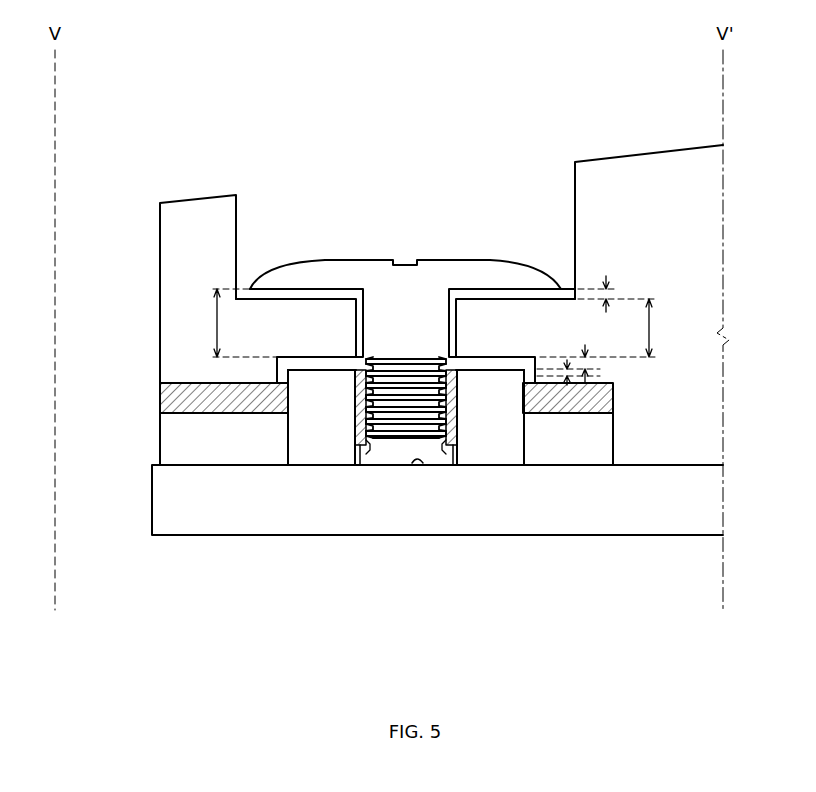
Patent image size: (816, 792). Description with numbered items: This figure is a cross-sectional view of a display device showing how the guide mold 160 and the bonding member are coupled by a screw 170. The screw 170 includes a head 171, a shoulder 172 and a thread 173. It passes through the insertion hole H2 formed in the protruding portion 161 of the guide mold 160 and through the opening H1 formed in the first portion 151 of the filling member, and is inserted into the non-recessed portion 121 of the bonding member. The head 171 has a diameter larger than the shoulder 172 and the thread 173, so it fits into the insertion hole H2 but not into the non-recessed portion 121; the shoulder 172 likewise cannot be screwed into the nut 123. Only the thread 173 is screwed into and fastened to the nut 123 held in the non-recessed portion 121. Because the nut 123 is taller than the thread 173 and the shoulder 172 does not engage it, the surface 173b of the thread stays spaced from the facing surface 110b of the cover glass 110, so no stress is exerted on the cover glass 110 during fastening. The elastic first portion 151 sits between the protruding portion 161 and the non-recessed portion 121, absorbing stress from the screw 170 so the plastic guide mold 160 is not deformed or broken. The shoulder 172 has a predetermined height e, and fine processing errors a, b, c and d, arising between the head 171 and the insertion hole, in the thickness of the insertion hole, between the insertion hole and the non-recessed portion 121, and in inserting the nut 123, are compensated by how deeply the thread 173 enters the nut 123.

The cover glass 110 is at (182, 500).
The surface of the cover glass 110b is at (417, 462).
The non-recessed portion 121 is at (265, 447).
The nut 123 is at (357, 460).
The first portion 151 is at (186, 398).
The guide mold 160 is at (682, 437).
The protruding portion 161 is at (185, 227).
The screw 170 is at (332, 174).
The head 171 is at (337, 277).
The shoulder 172 is at (403, 327).
The thread 173 is at (420, 387).
The surface of the thread 173b is at (393, 440).
The opening H1 is at (310, 440).
The insertion hole H2 is at (236, 247).
The processing error a is at (606, 283).
The thickness b is at (654, 328).
The processing error c is at (585, 362).
The processing error d is at (568, 360).
The height e is at (210, 323).